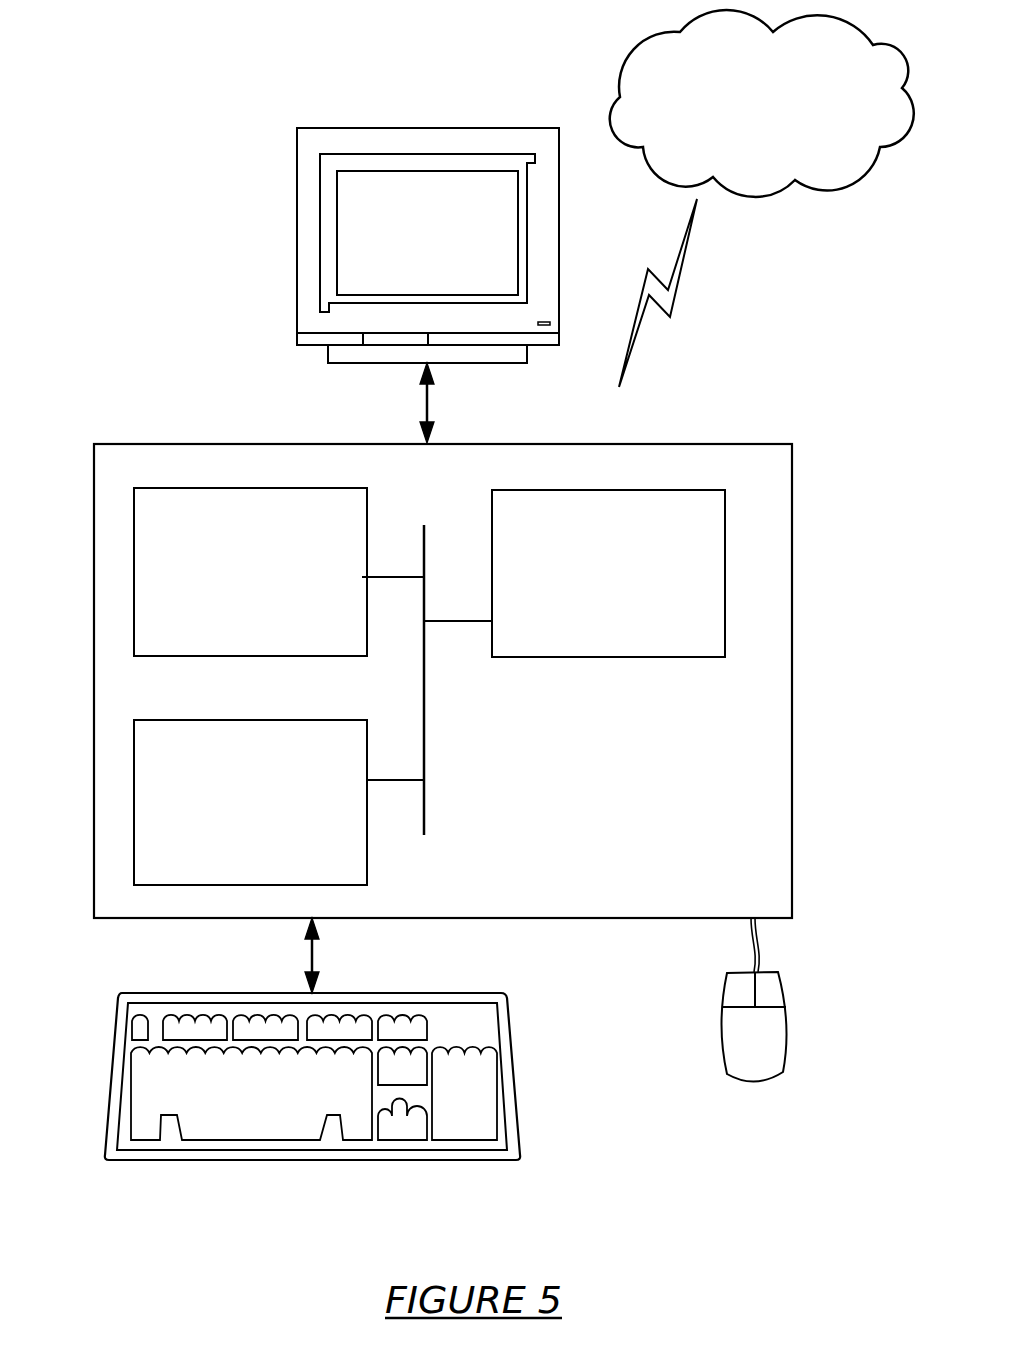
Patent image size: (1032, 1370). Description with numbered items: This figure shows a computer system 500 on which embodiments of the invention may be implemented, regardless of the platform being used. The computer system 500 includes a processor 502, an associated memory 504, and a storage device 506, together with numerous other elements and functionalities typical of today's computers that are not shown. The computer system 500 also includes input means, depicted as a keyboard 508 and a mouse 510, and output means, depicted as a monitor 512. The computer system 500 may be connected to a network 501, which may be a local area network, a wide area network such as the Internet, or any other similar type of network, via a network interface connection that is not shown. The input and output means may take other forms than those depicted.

The computer system 500 is at (148, 272).
The network 501 is at (741, 132).
The processor 502 is at (585, 586).
The memory 504 is at (229, 584).
The storage device 506 is at (225, 815).
The keyboard 508 is at (223, 1109).
The mouse 510 is at (731, 1049).
The monitor 512 is at (405, 249).